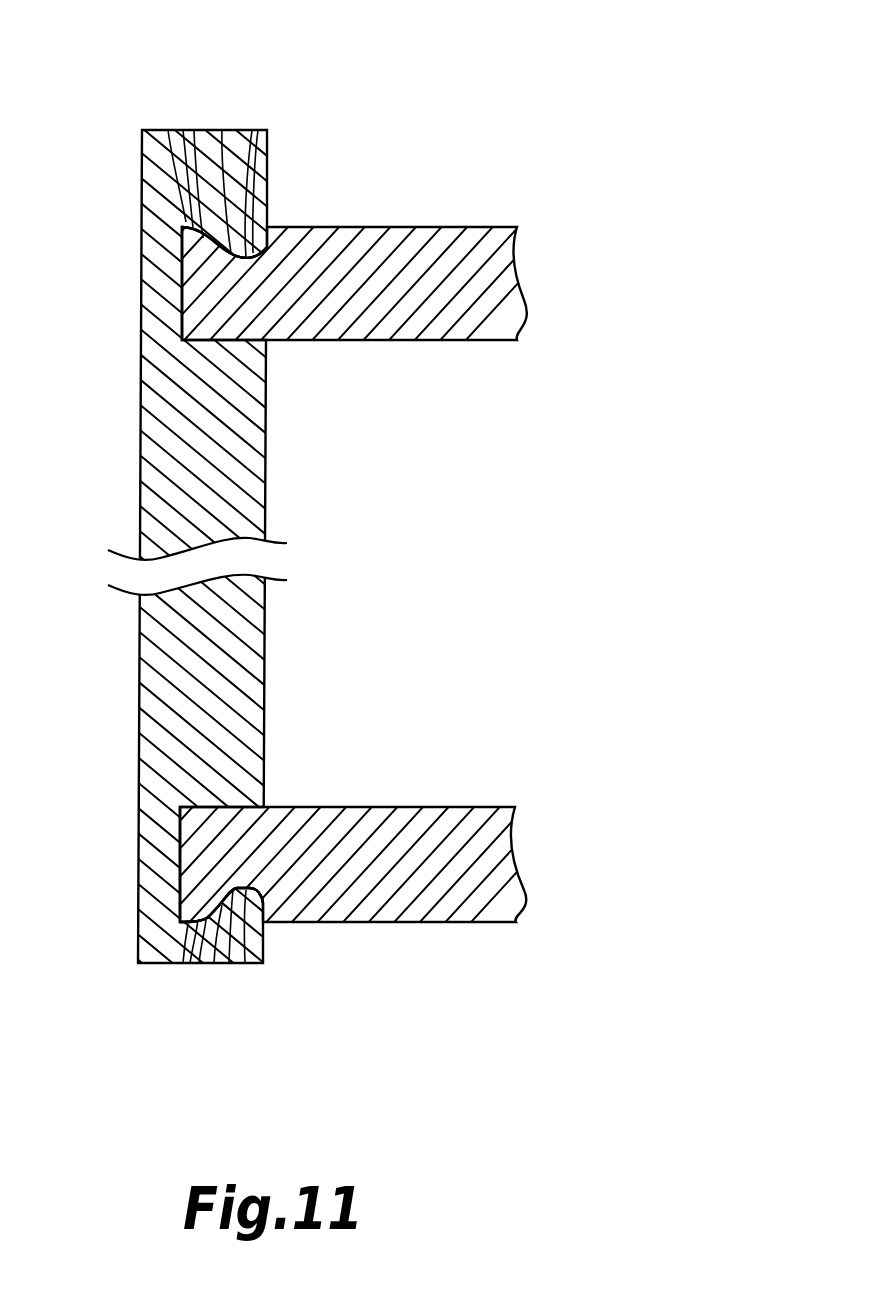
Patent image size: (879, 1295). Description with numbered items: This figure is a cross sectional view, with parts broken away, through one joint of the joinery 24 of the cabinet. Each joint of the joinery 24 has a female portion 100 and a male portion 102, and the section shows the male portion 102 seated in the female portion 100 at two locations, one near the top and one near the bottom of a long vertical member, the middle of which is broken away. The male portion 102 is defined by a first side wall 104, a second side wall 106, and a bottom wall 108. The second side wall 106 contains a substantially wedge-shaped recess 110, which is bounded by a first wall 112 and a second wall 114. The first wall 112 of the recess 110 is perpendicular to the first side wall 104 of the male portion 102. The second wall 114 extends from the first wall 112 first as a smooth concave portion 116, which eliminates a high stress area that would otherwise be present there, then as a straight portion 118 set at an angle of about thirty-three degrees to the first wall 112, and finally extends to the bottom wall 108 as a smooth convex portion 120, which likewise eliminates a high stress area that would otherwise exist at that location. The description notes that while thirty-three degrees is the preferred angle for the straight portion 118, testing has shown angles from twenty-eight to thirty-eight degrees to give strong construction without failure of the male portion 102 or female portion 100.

The joinery 24 is at (310, 575).
The female portion 100 is at (253, 575).
The male portion 102 is at (324, 354).
The first side wall 104 is at (270, 352).
The second side wall 106 is at (194, 130).
The bottom wall 108 is at (184, 286).
The substantially wedge-shaped recess 110 is at (258, 130).
The first wall 112 is at (267, 247).
The second wall 114 is at (168, 130).
The smooth concave portion 116 is at (252, 130).
The straight portion 118 is at (222, 130).
The smooth convex portion 120 is at (183, 130).